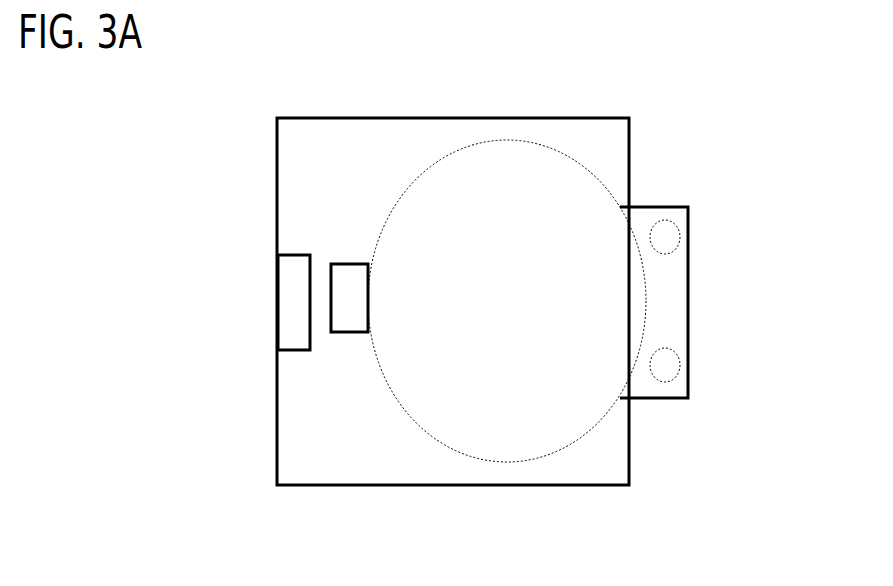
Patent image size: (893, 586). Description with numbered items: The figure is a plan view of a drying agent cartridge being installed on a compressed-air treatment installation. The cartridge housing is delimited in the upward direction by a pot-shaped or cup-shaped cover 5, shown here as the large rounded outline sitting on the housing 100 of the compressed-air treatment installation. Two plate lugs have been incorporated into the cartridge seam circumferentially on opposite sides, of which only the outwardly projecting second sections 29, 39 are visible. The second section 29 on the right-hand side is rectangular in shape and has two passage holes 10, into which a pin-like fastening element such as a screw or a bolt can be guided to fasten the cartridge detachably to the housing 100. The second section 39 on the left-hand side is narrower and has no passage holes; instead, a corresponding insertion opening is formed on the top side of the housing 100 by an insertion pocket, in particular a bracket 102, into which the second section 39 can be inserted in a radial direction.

The housing of the compressed-air treatment installation 100 is at (296, 448).
The bracket 102 is at (295, 330).
The second section 39 is at (343, 288).
The cover 5 is at (590, 410).
The second section 29 is at (637, 213).
The passage holes 10 is at (665, 237).